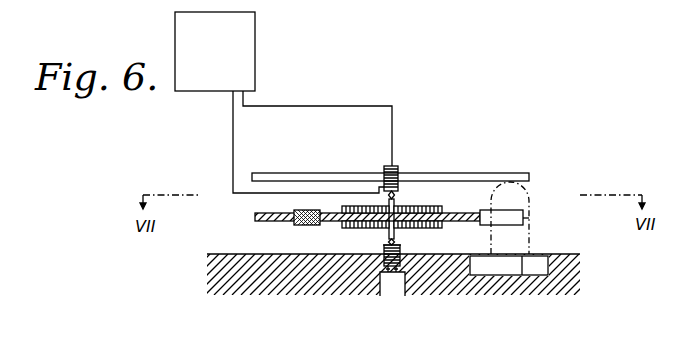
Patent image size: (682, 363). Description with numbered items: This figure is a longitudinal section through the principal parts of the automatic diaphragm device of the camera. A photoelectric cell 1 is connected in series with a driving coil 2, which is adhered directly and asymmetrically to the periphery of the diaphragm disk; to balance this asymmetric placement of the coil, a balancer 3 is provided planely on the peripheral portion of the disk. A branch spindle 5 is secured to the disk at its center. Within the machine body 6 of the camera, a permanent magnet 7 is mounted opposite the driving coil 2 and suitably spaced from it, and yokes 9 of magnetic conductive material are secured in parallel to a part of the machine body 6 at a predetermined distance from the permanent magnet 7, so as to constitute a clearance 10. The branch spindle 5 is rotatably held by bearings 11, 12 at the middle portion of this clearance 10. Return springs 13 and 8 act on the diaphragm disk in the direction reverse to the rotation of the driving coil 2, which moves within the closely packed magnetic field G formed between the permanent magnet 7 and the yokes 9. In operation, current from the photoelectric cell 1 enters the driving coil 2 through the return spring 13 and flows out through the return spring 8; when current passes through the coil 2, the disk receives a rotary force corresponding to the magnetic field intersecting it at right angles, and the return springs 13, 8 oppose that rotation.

The photoelectric cell 1 is at (248, 52).
The driving coil 2 is at (514, 219).
The balancer 3 is at (308, 226).
The branch spindle 5 is at (388, 228).
The machine body 6 is at (453, 281).
The permanent magnet 7 is at (508, 268).
The return spring 8 is at (431, 232).
The yoke 9 is at (427, 173).
The clearance 10 is at (470, 197).
The bearing 11 is at (395, 166).
The bearing 12 is at (402, 262).
The return spring 13 is at (432, 206).
The magnetic field G is at (530, 196).